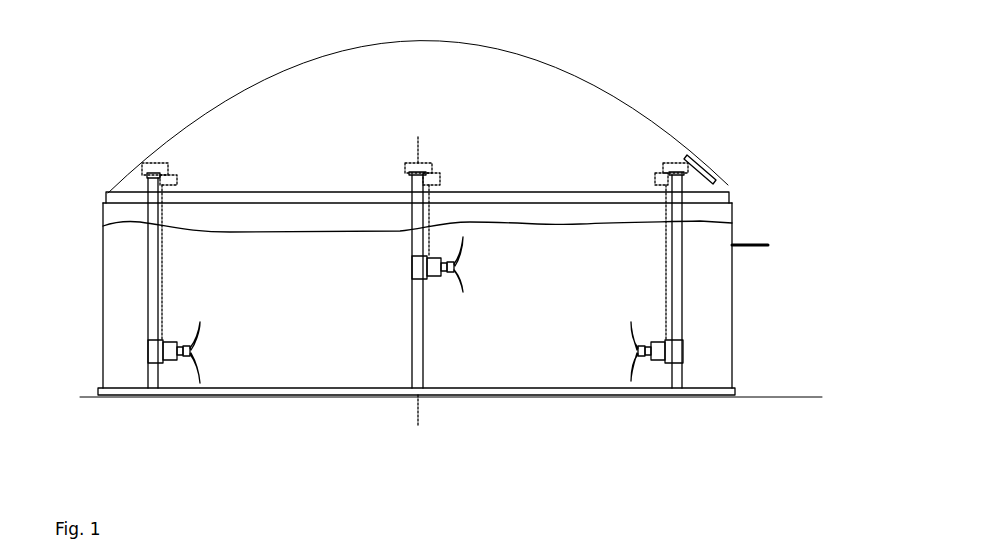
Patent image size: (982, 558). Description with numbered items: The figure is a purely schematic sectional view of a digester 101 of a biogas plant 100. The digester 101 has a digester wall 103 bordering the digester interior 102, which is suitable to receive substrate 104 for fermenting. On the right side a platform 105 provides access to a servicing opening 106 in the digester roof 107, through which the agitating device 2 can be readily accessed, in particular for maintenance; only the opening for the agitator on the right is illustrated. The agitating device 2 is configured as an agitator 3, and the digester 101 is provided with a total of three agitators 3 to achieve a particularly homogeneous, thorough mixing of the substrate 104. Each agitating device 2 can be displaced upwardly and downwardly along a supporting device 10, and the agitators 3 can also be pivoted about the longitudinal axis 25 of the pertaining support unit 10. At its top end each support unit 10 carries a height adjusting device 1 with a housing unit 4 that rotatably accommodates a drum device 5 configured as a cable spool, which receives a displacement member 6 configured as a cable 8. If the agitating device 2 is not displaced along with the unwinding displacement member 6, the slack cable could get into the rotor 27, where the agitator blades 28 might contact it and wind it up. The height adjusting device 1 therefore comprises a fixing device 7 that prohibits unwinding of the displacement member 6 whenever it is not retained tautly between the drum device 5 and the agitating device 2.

The biogas plant 100 is at (122, 40).
The height adjusting device 1 is at (180, 163).
The agitating device 2 is at (460, 285).
The agitator 3 is at (177, 365).
The housing unit 4 is at (162, 175).
The drum device 5 is at (163, 177).
The displacement member 6 is at (163, 262).
The fixing device 7 is at (177, 177).
The cable 8 is at (667, 245).
The supporting device 10 is at (153, 323).
The longitudinal axis 25 is at (418, 410).
The rotor 27 is at (202, 357).
The agitator blades 28 is at (200, 330).
The digester 101 is at (732, 320).
The digester interior 102 is at (348, 314).
The digester wall 103 is at (102, 375).
The substrate 104 is at (120, 320).
The platform 105 is at (750, 247).
The servicing opening 106 is at (717, 177).
The digester roof 107 is at (637, 115).